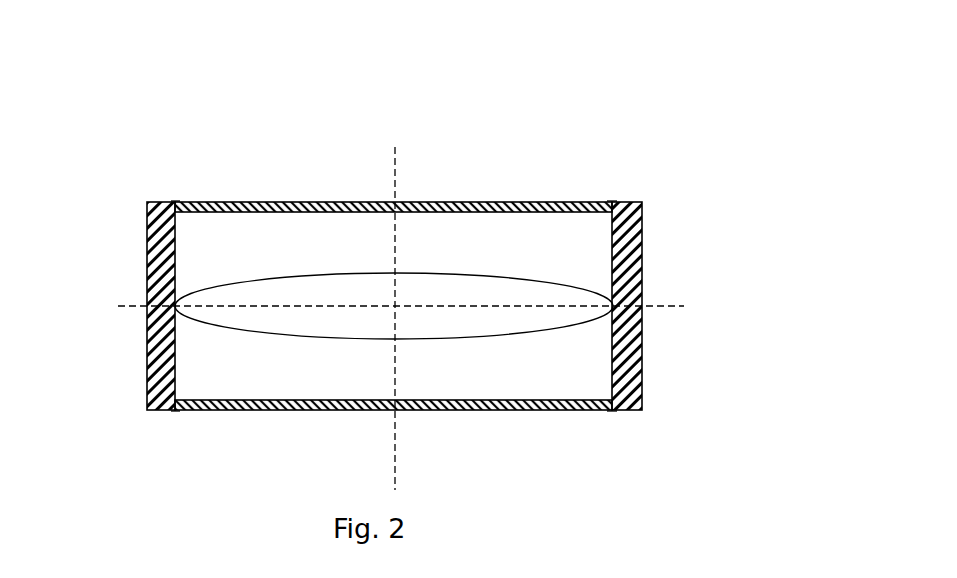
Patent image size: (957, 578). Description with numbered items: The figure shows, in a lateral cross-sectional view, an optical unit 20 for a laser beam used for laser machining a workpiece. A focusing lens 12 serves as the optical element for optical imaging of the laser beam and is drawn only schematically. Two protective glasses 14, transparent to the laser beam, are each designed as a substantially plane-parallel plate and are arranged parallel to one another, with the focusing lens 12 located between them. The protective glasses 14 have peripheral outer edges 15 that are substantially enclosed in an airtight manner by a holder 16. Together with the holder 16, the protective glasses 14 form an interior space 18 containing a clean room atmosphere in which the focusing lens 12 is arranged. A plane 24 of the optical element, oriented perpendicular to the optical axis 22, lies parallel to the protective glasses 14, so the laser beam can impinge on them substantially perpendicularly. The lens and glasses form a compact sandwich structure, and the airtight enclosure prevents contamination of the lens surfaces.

The focusing lens 12 is at (350, 272).
The protective glasses 14 is at (510, 201).
The peripheral outer edges 15 is at (176, 201).
The holder 16 is at (147, 240).
The interior space 18 is at (578, 263).
The optical unit 20 is at (568, 88).
The optical axis 22 is at (395, 175).
The plane 24 is at (657, 307).